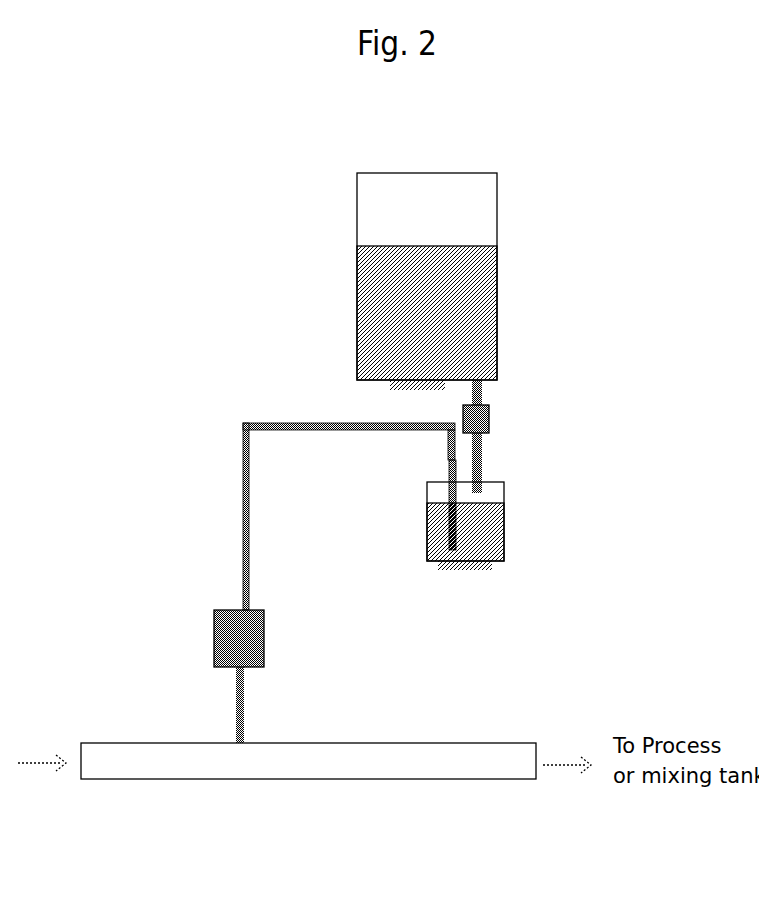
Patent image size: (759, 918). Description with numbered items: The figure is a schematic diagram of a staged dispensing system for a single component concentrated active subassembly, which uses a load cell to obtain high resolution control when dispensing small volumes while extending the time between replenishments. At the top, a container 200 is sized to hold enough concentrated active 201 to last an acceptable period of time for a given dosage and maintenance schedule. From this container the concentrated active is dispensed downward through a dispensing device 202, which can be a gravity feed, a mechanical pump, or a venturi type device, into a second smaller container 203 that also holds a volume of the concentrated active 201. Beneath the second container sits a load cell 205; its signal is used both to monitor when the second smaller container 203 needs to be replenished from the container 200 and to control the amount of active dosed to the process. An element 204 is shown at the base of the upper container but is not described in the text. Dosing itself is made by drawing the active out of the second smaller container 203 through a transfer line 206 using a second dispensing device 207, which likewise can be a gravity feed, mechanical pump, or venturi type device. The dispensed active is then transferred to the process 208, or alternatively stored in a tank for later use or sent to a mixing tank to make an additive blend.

The container 200 is at (478, 173).
The concentrated active 201 is at (468, 250).
The dispensing device 202 is at (548, 408).
The second smaller container 203 is at (498, 482).
The agitator / heater 204 is at (423, 397).
The load cell 205 is at (488, 572).
The transfer line 206 is at (294, 422).
The dispensing device 207 is at (217, 610).
The process 208 is at (159, 740).